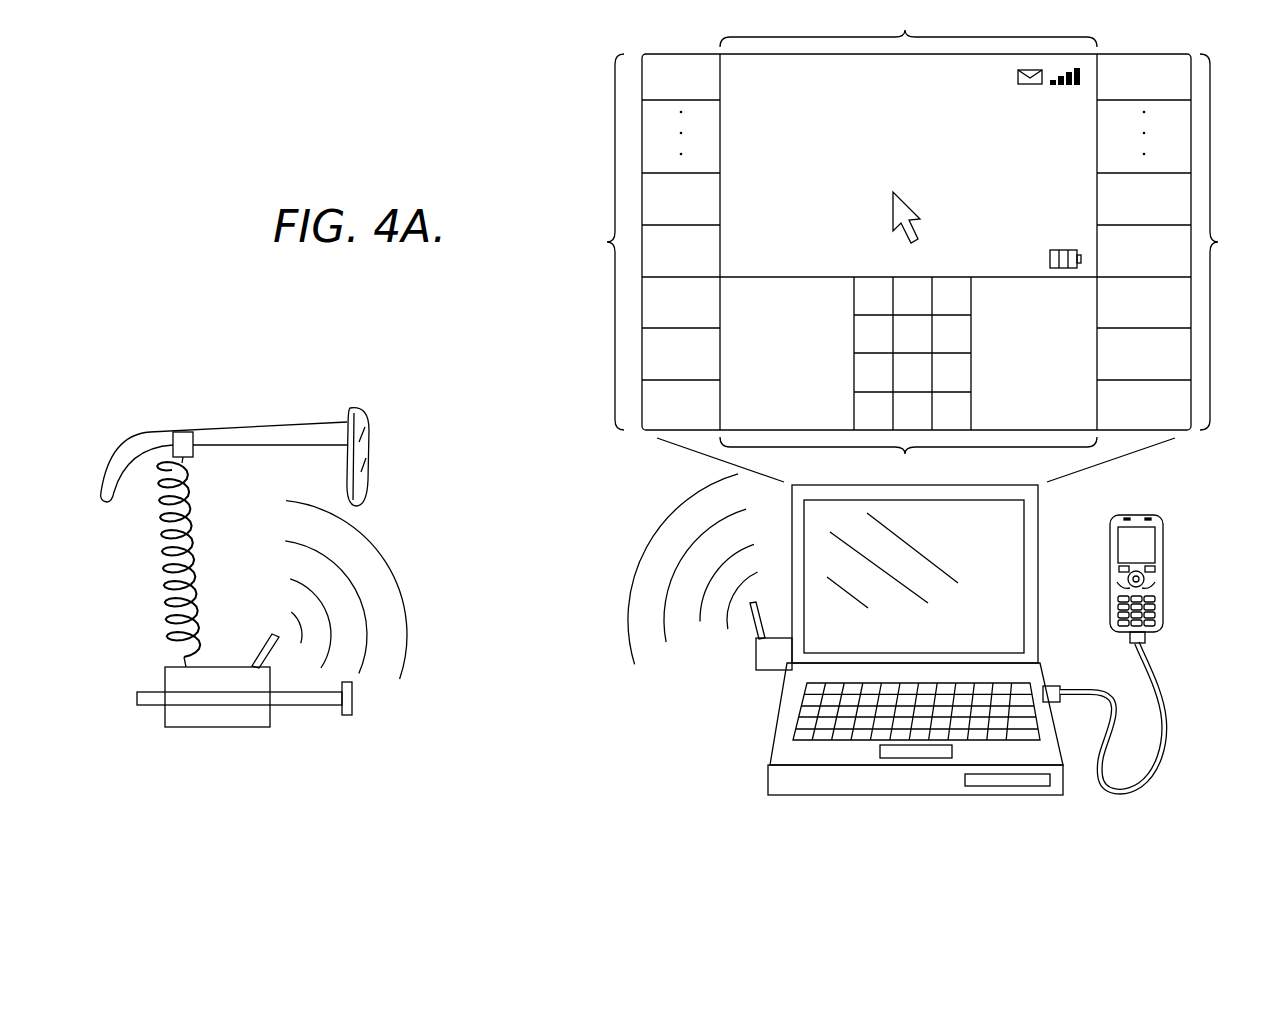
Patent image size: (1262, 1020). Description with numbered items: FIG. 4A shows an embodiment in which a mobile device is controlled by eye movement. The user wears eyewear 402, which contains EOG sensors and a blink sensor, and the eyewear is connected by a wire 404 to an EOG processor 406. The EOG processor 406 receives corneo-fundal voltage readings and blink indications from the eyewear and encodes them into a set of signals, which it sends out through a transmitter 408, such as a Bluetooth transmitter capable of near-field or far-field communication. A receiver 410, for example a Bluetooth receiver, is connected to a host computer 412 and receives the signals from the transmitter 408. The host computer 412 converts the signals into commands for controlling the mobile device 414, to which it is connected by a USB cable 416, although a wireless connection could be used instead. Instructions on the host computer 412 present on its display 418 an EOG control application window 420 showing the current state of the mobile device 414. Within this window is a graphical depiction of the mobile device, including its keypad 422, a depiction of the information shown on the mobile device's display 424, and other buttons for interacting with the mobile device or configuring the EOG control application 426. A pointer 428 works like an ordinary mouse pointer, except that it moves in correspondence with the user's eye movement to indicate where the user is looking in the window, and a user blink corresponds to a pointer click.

The eyewear 402 is at (288, 425).
The wire 404 is at (192, 511).
The EOG processor 406 is at (229, 727).
The transmitter 408 is at (259, 652).
The receiver 410 is at (752, 615).
The host computer 412 is at (826, 796).
The mobile device 414 is at (1164, 567).
The USB cable 416 is at (1083, 694).
The display 418 is at (1013, 568).
The EOG control application window 420 is at (1149, 54).
The keypad 422 is at (908, 460).
The depiction of the information depicted on the mobile device's display 424 is at (908, 26).
The buttons for interactions with the mobile device or configurations of the EOG con 426 is at (914, 242).
The pointer 428 is at (917, 203).